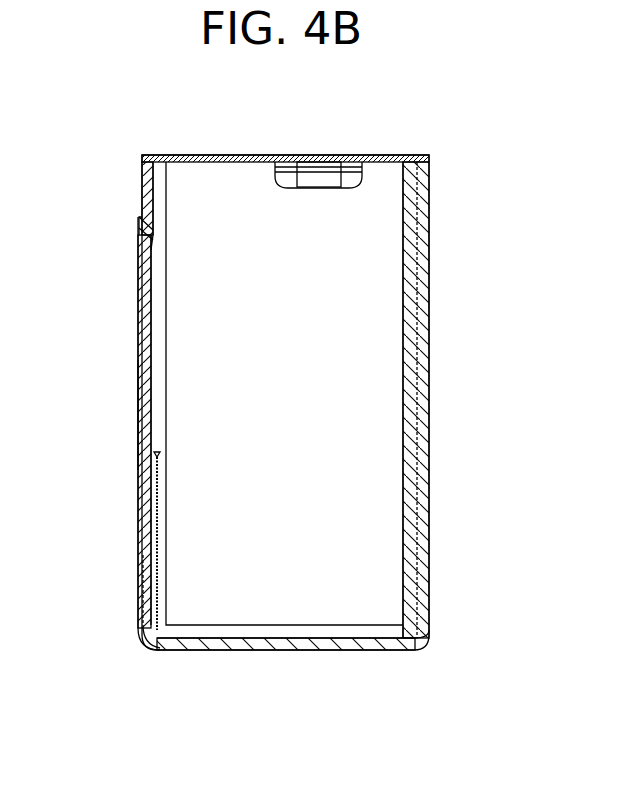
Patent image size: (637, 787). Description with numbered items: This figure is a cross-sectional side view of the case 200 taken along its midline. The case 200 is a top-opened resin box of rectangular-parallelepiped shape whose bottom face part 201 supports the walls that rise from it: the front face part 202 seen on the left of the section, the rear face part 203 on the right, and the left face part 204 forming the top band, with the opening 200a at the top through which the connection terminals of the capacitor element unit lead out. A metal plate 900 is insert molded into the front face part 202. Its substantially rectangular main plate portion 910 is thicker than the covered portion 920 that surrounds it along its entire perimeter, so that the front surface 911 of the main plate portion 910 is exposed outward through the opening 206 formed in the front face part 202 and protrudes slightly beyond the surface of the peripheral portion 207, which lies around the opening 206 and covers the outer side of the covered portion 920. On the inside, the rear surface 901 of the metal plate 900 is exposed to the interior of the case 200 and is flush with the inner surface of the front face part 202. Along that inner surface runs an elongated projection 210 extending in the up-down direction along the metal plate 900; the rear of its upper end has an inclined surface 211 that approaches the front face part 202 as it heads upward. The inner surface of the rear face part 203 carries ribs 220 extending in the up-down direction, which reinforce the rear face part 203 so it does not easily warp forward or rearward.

The case 200 is at (355, 146).
The opening 200a is at (262, 157).
The bottom face part 201 is at (320, 655).
The front face part 202 is at (140, 190).
The rear face part 203 is at (430, 335).
The left face part 204 is at (212, 156).
The opening 206 is at (151, 273).
The peripheral portion 207 is at (138, 230).
The elongated projection 210 is at (160, 515).
The inclined surface 211 is at (157, 455).
The rib 220 is at (402, 350).
The metal plate 900 is at (137, 333).
The rear surface 901 is at (160, 330).
The main plate portion 910 is at (137, 532).
The front surface 911 is at (137, 415).
The covered portion 920 is at (140, 592).